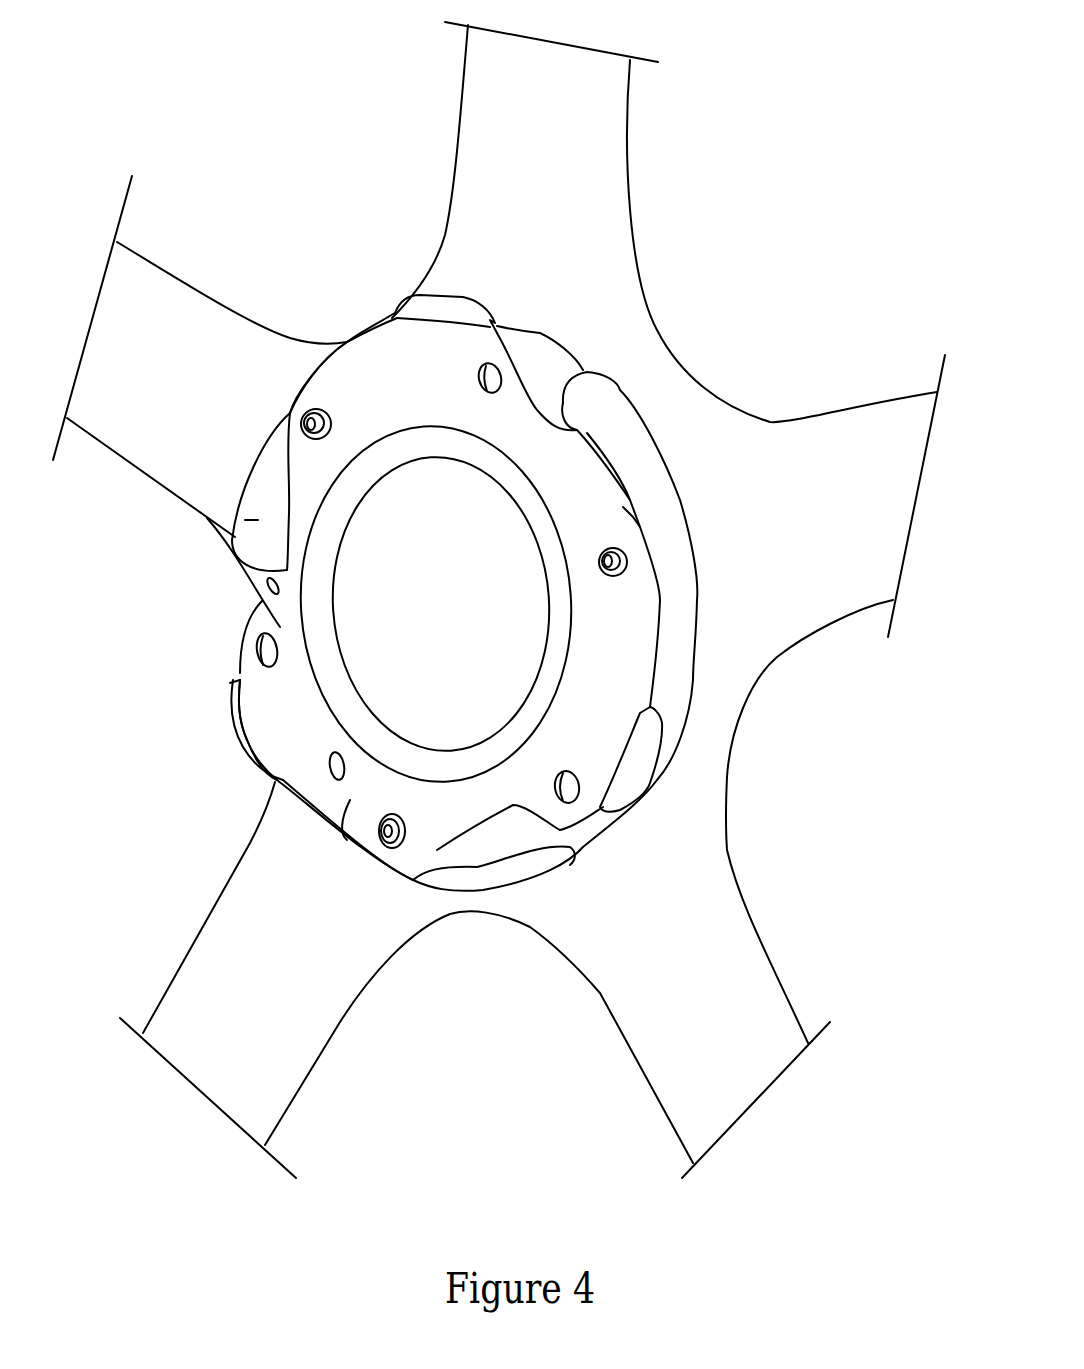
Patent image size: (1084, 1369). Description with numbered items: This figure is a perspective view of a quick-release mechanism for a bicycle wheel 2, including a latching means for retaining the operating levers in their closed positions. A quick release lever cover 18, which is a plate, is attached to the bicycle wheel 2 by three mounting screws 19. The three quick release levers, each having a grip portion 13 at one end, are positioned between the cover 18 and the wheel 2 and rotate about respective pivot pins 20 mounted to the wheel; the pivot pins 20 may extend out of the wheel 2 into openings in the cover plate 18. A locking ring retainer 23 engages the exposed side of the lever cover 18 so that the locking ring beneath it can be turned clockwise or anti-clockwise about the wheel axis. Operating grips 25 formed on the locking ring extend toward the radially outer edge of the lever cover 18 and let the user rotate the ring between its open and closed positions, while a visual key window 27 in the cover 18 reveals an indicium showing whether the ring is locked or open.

The bicycle wheel 2 is at (508, 192).
The grip portion 13 is at (617, 443).
The quick release lever cover 18 is at (350, 800).
The mounting screw 19 is at (322, 410).
The pivot pin 20 is at (493, 370).
The locking ring retainer 23 is at (553, 683).
The operating grip 25 is at (447, 310).
The visual key window 27 is at (333, 774).